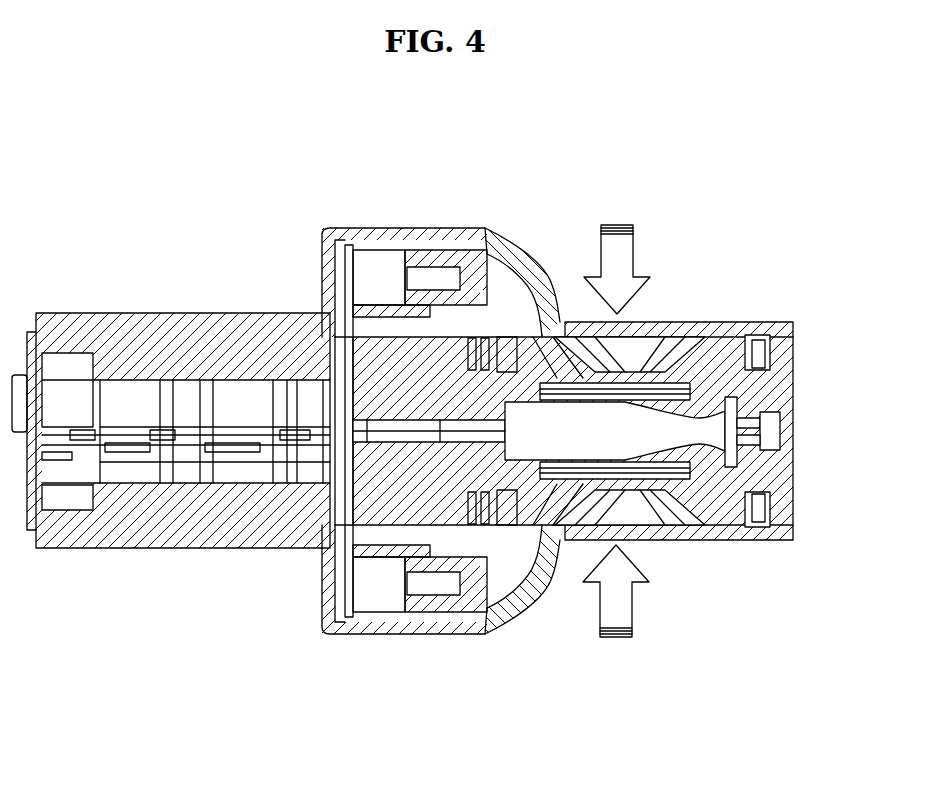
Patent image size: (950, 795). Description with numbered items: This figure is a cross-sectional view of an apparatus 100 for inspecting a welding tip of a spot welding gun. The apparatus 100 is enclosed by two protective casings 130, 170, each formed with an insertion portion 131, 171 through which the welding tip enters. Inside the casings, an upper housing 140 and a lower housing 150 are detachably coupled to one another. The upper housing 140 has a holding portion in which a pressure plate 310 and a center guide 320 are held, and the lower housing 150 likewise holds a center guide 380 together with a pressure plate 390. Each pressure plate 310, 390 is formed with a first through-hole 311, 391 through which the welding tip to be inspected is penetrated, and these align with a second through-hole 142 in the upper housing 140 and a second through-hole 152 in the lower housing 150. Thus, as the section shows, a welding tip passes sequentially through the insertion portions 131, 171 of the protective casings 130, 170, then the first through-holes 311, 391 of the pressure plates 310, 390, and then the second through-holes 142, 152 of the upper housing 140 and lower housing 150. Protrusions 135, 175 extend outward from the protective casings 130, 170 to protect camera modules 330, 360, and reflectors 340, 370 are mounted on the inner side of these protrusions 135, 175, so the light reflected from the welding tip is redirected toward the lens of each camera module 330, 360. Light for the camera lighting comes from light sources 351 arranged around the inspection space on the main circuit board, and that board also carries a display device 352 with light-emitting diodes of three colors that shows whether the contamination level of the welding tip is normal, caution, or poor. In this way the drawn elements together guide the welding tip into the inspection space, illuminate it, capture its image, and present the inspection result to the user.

The apparatus for inspecting a welding tip 100 is at (126, 123).
The protective casing 130 is at (718, 322).
The insertion portion 131 is at (647, 322).
The protrusion 135 is at (480, 245).
The upper housing 140 is at (162, 313).
The second through-hole 142 is at (727, 410).
The lower housing 150 is at (162, 548).
The second through-hole 152 is at (765, 460).
The protective casing 170 is at (722, 540).
The insertion portion 171 is at (646, 540).
The protrusion 175 is at (479, 634).
The pressure plate 310 is at (742, 328).
The first through-hole 311 is at (668, 337).
The center guide 320 is at (770, 355).
The camera module 330 is at (385, 262).
The reflector 340 is at (529, 268).
The light source 351 is at (780, 441).
The display device 352 is at (778, 426).
The camera module 360 is at (388, 600).
The reflector 370 is at (529, 596).
The center guide 380 is at (770, 518).
The pressure plate 390 is at (755, 542).
The first through-hole 391 is at (670, 540).